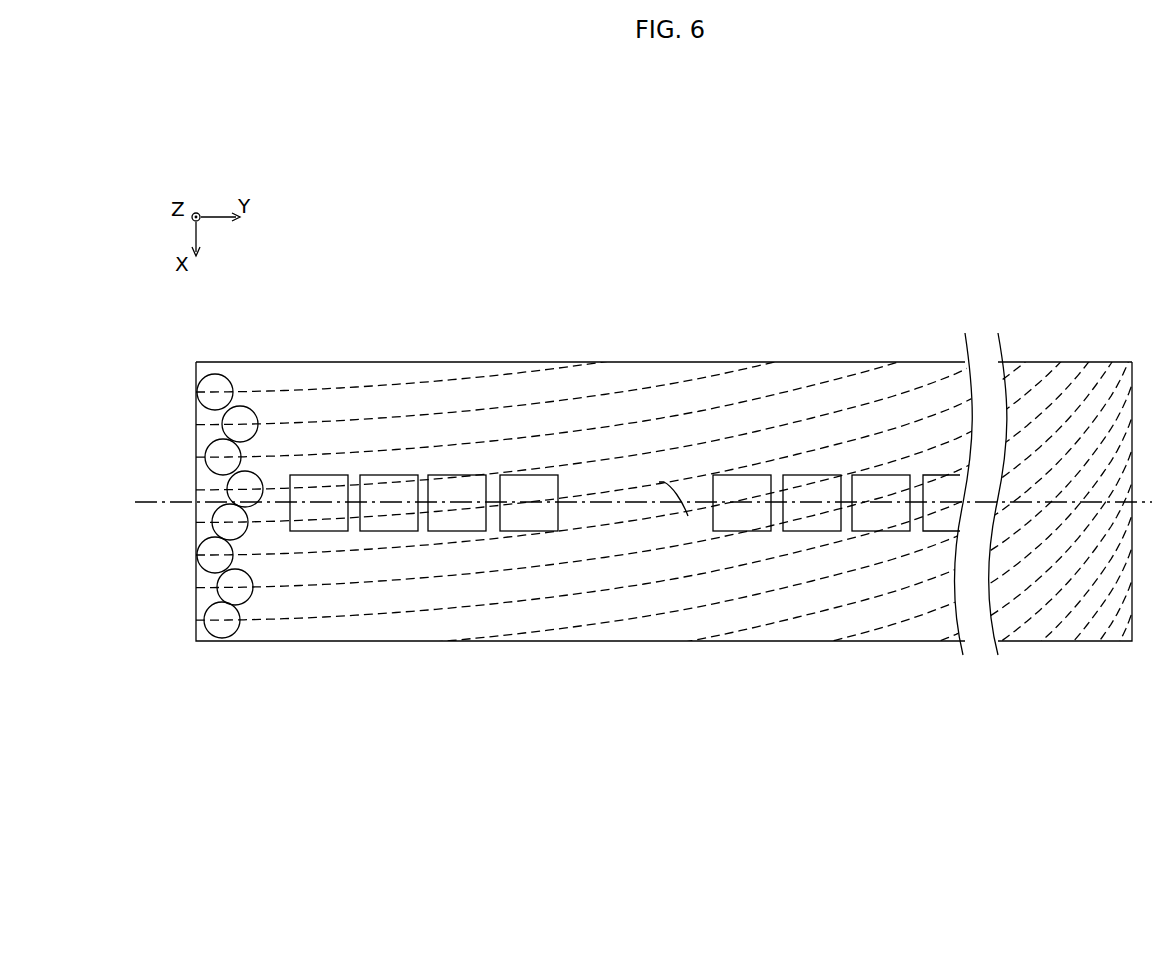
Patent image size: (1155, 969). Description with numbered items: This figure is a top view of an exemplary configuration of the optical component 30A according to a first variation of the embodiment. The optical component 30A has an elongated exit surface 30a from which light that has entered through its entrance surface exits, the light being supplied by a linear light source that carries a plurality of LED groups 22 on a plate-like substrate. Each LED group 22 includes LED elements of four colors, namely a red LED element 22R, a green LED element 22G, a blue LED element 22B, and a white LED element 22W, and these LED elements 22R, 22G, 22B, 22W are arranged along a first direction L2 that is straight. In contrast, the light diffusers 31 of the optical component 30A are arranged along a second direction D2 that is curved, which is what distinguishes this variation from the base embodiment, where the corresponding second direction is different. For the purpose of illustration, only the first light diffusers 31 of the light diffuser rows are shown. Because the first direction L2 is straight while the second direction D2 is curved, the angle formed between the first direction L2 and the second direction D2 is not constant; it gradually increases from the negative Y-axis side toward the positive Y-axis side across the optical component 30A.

The optical component 30A is at (967, 217).
The exit surface 30a is at (745, 378).
The light diffuser 31 is at (214, 384).
The LED group 22 is at (607, 610).
The red LED element 22R is at (310, 534).
The green LED element 22G is at (378, 534).
The blue LED element 22B is at (450, 534).
The white LED element 22W is at (529, 591).
The second direction D2 is at (685, 476).
The first direction L2 is at (635, 503).